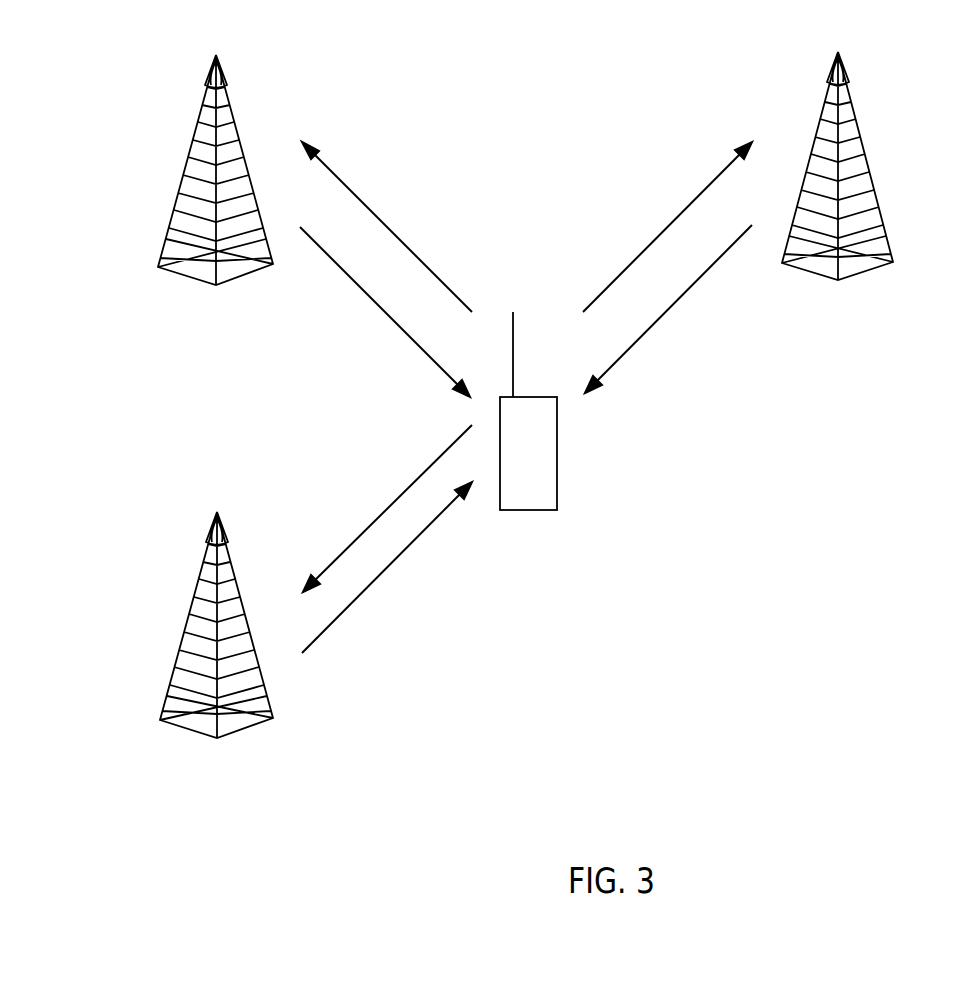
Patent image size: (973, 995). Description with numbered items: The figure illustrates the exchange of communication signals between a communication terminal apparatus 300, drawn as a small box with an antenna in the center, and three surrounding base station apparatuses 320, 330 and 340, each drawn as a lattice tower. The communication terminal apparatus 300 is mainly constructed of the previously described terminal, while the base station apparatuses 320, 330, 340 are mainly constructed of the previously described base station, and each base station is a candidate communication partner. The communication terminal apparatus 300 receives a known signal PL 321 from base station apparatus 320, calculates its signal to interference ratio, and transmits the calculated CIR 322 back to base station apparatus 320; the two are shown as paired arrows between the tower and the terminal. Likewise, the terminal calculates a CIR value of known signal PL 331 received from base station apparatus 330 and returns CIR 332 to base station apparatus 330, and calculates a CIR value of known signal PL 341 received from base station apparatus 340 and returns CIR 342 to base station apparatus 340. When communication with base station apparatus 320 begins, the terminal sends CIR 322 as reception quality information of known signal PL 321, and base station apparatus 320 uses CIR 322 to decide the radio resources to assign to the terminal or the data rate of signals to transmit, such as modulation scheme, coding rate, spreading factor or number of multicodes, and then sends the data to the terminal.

The communication terminal apparatus 300 is at (525, 396).
The base station apparatus 320 is at (237, 128).
The base station apparatus 330 is at (867, 167).
The base station apparatus 340 is at (235, 566).
The known signal PL321 321 is at (385, 312).
The CIR322 322 is at (387, 227).
The known signal PL331 331 is at (668, 309).
The CIR332 332 is at (667, 227).
The known signal PL341 341 is at (387, 567).
The CIR342 342 is at (387, 508).